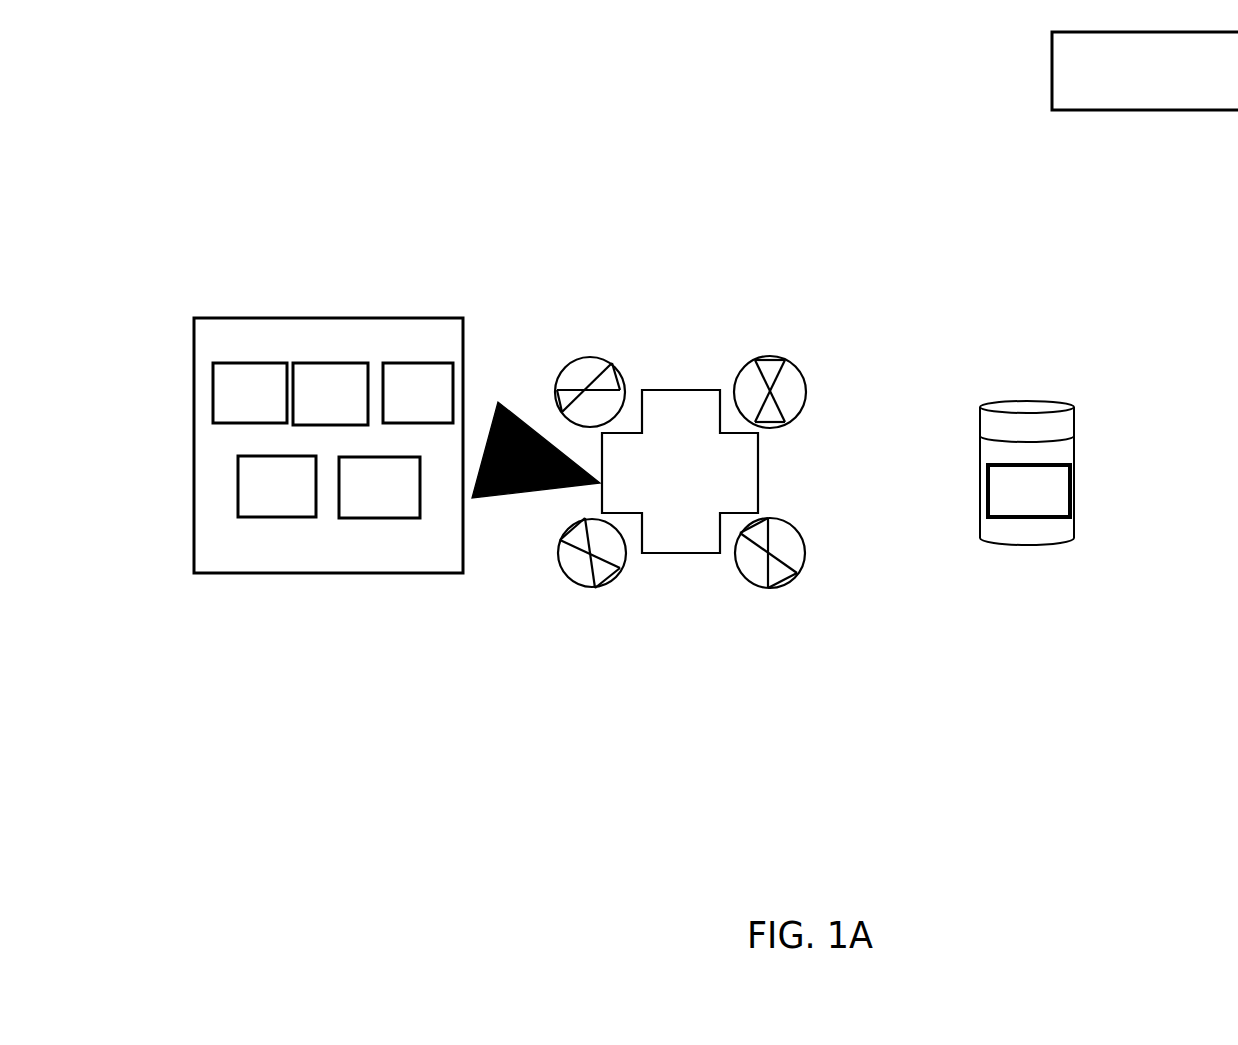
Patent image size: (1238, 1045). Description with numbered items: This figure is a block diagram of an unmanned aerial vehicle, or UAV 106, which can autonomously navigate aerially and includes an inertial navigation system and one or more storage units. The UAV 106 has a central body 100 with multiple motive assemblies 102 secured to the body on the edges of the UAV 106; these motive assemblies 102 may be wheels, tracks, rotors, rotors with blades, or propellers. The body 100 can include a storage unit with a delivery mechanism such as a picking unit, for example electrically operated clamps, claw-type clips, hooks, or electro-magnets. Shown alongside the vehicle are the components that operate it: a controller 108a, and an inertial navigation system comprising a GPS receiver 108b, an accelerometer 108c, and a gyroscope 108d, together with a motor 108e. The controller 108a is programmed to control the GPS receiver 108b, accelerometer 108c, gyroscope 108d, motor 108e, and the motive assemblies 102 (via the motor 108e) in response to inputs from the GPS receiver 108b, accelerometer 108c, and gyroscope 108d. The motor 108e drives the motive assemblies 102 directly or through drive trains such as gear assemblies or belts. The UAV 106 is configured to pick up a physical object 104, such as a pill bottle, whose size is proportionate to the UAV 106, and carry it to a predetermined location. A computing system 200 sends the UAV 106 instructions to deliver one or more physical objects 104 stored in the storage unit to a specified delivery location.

The body 100 is at (675, 553).
The motive assemblies 102 is at (808, 392).
The physical object 104 is at (1067, 450).
The unmanned aerial vehicle (UAV) 106 is at (539, 356).
The controller 108a is at (250, 393).
The GPS receiver 108b is at (330, 394).
The accelerometer 108c is at (418, 393).
The gyroscope 108d is at (277, 486).
The motor 108e is at (379, 487).
The computing system 200 is at (1145, 71).